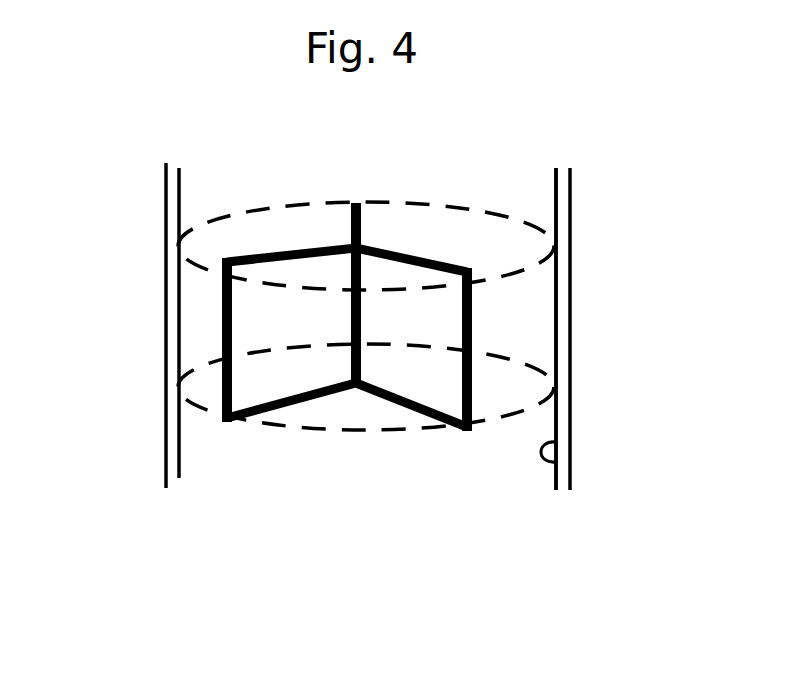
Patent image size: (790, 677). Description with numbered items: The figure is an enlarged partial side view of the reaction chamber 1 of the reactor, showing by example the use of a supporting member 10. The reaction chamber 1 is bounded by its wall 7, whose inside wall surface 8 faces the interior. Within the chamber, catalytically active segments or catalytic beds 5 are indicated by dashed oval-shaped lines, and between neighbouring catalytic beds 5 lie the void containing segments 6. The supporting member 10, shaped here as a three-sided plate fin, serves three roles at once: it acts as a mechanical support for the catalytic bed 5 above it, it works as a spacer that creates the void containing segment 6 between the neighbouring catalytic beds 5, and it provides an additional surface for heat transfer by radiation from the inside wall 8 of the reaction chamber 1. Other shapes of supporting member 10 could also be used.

The reaction chamber 1 is at (582, 292).
The catalytically active segments 5 is at (222, 232).
The void containing segments 6 is at (253, 317).
The wall of the reaction chamber 7 is at (562, 343).
The inside wall surface of the reaction chamber 8 is at (556, 457).
The supporting member 10 is at (275, 317).